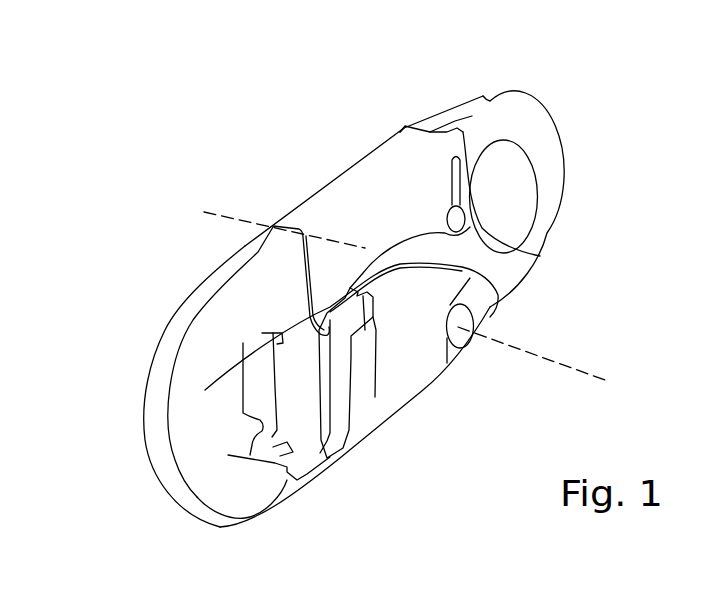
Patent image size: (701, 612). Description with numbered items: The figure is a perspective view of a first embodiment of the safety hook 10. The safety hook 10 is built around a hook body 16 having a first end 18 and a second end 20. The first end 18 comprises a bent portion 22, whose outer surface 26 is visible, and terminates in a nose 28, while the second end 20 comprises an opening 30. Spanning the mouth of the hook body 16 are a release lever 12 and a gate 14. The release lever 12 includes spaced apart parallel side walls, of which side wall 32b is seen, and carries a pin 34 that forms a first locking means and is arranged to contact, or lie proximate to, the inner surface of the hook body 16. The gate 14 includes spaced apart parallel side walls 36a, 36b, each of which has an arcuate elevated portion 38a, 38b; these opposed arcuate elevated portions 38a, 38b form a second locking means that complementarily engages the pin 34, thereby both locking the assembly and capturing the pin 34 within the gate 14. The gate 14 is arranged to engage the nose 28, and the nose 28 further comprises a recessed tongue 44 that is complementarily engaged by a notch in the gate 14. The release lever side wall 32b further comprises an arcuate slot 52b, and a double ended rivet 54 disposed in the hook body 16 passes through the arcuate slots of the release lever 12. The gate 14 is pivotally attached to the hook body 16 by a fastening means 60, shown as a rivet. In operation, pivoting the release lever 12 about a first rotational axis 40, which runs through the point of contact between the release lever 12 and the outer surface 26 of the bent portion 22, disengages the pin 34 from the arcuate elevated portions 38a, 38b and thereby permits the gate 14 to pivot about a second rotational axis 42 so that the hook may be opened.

The safety hook 10 is at (175, 118).
The release lever 12 is at (343, 163).
The gate 14 is at (412, 407).
The hook body 16 is at (522, 296).
The first end 18 is at (128, 407).
The second end 20 is at (560, 128).
The bent portion 22 is at (180, 425).
The outer surface 26 is at (222, 270).
The nose 28 is at (308, 497).
The opening 30 is at (502, 183).
The side wall 32b is at (403, 190).
The pin 34 is at (330, 310).
The side wall 36a is at (302, 390).
The side wall 36b is at (347, 457).
The arcuate elevated portion 38a is at (262, 397).
The arcuate elevated portion 38b is at (375, 400).
The first rotational axis 40 is at (245, 223).
The second rotational axis 42 is at (541, 362).
The recessed tongue 44 is at (283, 485).
The arcuate slot 52b is at (462, 112).
The double ended rivet 54 is at (457, 220).
The fastening means 60 is at (466, 318).